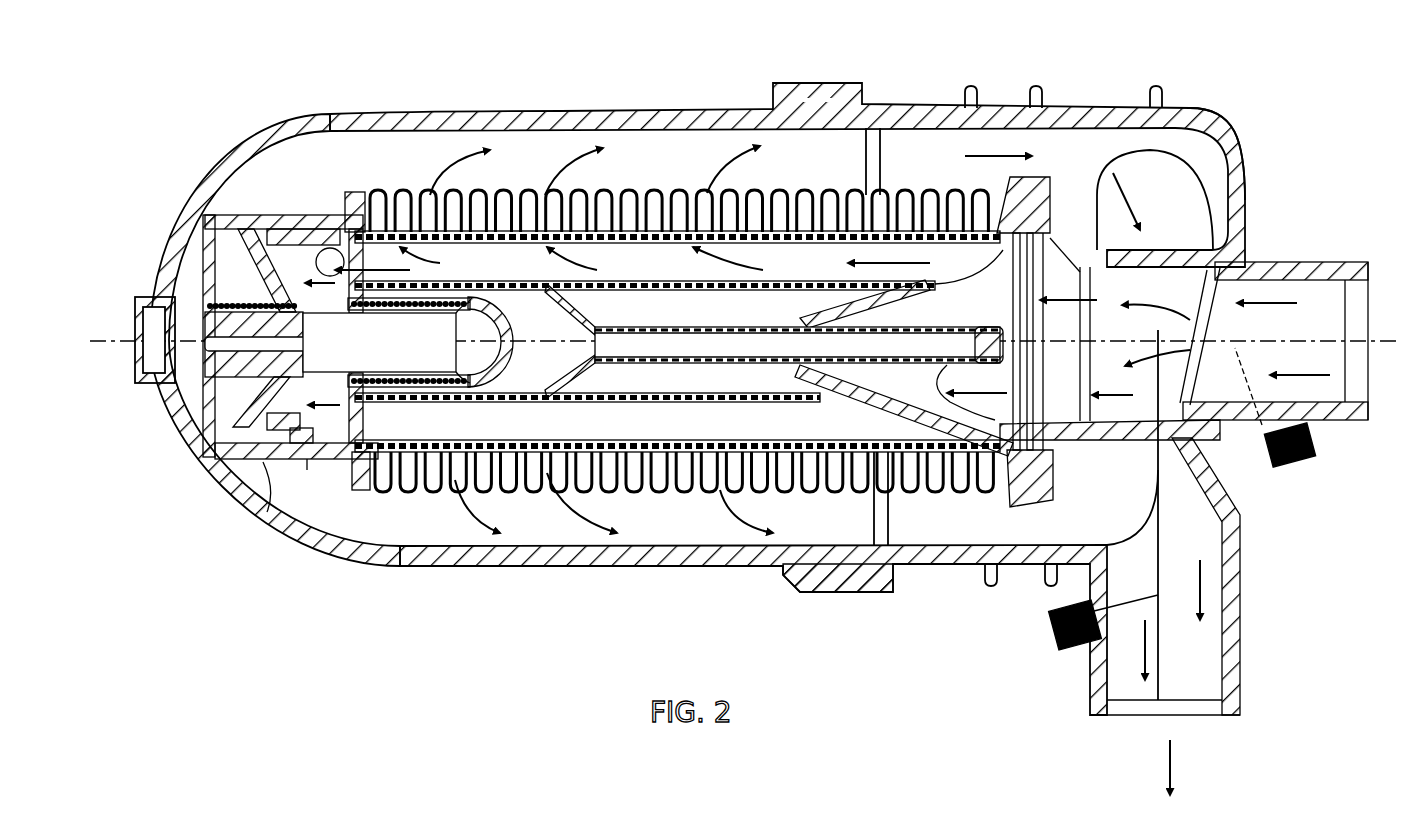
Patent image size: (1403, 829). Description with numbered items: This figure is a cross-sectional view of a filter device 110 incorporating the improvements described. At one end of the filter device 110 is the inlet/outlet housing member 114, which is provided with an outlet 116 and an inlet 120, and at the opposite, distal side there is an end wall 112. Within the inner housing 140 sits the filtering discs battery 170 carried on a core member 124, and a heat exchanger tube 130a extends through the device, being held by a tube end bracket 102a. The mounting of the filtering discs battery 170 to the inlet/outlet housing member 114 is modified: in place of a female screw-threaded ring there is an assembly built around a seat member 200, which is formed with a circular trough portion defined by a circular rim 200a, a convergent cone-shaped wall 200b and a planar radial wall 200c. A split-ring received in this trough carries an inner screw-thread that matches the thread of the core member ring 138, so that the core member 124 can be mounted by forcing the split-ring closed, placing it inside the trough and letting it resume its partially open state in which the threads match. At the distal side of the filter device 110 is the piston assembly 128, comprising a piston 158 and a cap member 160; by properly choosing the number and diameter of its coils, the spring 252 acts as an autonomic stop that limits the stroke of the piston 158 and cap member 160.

The filter device 110 is at (1082, 96).
The end wall 112 is at (240, 158).
The inlet/outlet housing member 114 is at (1224, 150).
The outlet 116 is at (1240, 553).
The inlet 120 is at (1274, 262).
The core member 124 is at (717, 347).
The piston assembly 128 is at (307, 178).
The heat exchanger tube 130a is at (611, 222).
The core member ring 138 is at (913, 525).
The inner housing 140 is at (307, 462).
The piston 158 is at (337, 205).
The cap member 160 is at (267, 512).
The filtering discs battery 170 is at (415, 190).
The tube end bracket 102a is at (367, 182).
The seat member 200 is at (1048, 438).
The circular rim 200a is at (1035, 497).
The convergent cone-shaped wall 200b is at (1032, 505).
The planar radial wall 200c is at (1060, 470).
The spring 252 is at (465, 392).